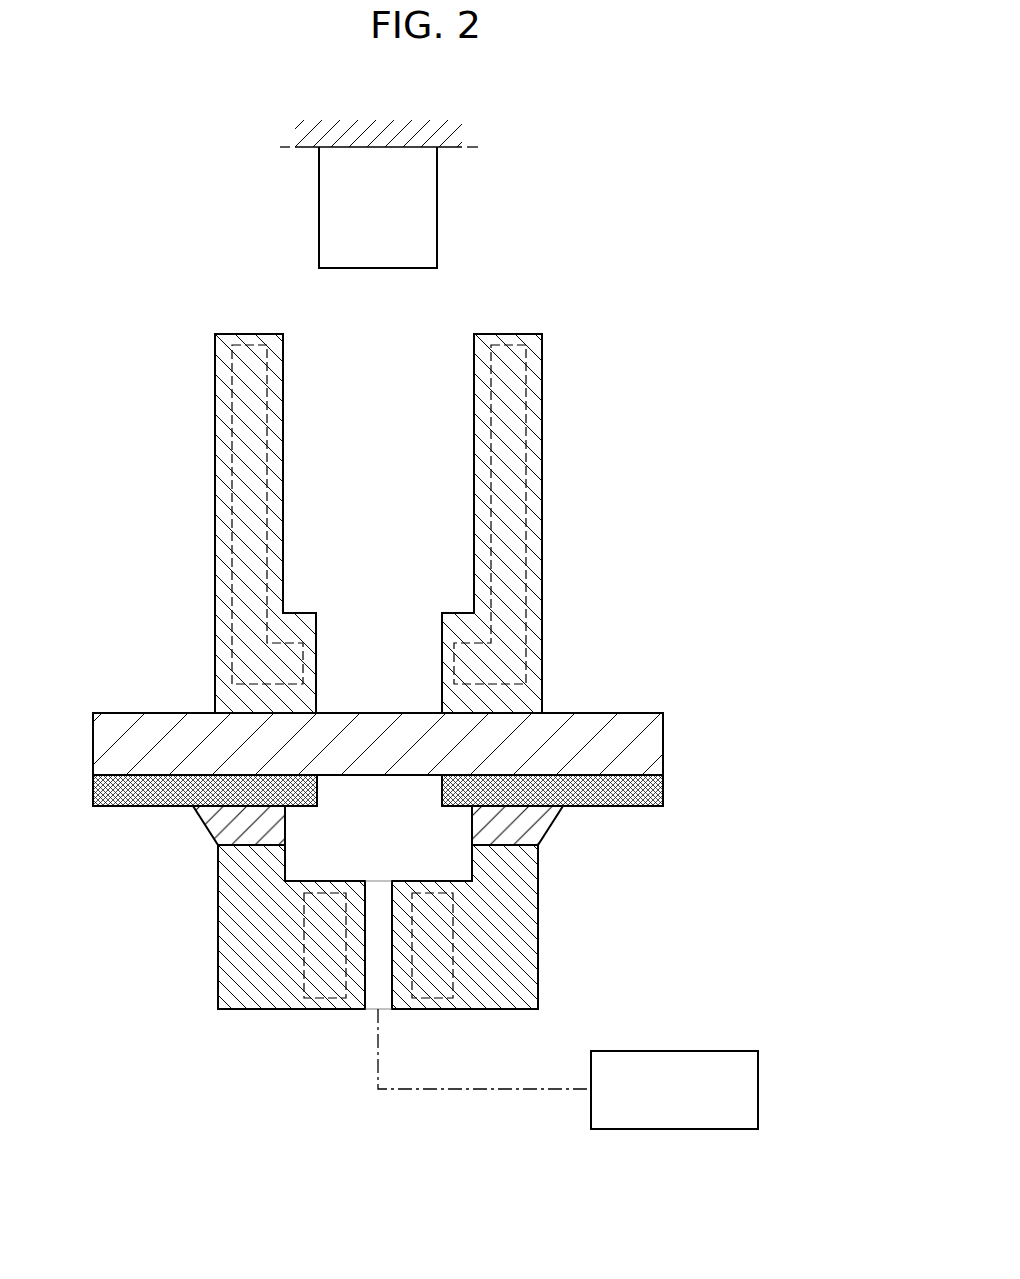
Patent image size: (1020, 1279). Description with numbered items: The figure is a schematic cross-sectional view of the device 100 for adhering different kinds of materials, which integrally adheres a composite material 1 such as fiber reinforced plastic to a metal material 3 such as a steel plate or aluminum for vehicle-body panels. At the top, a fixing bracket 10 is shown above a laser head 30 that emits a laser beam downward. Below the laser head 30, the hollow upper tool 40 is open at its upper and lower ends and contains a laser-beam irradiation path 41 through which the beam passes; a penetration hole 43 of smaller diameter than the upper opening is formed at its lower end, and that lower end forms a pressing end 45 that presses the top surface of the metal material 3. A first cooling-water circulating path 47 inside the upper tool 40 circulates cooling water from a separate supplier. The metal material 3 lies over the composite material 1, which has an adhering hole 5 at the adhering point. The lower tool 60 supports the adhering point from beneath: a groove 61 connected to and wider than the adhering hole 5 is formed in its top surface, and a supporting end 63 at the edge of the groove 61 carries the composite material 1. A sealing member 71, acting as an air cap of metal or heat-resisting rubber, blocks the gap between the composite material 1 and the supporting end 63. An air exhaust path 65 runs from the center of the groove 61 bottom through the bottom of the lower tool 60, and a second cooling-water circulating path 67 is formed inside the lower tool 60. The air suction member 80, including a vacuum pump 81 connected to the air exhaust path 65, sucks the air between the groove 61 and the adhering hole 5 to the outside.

The device for adhering different kinds of materials 100 is at (397, 92).
The fixing bracket 10 is at (437, 127).
The laser head 30 is at (421, 213).
The upper tool 40 is at (392, 539).
The laser-beam irradiation path 41 is at (372, 490).
The penetration hole 43 is at (316, 658).
The pressing end 45 is at (280, 727).
The first cooling-water circulating path 47 is at (525, 515).
The metal material 3 is at (664, 743).
The composite material 1 is at (664, 790).
The adhering hole 5 is at (404, 792).
The lower tool 60 is at (379, 951).
The groove 61 is at (420, 881).
The supporting end 63 is at (252, 845).
The air exhaust path 65 is at (378, 952).
The second cooling-water circulating path 67 is at (453, 955).
The sealing member 71 is at (540, 822).
The air suction member 80 is at (568, 1049).
The vacuum pump 81 is at (722, 1062).